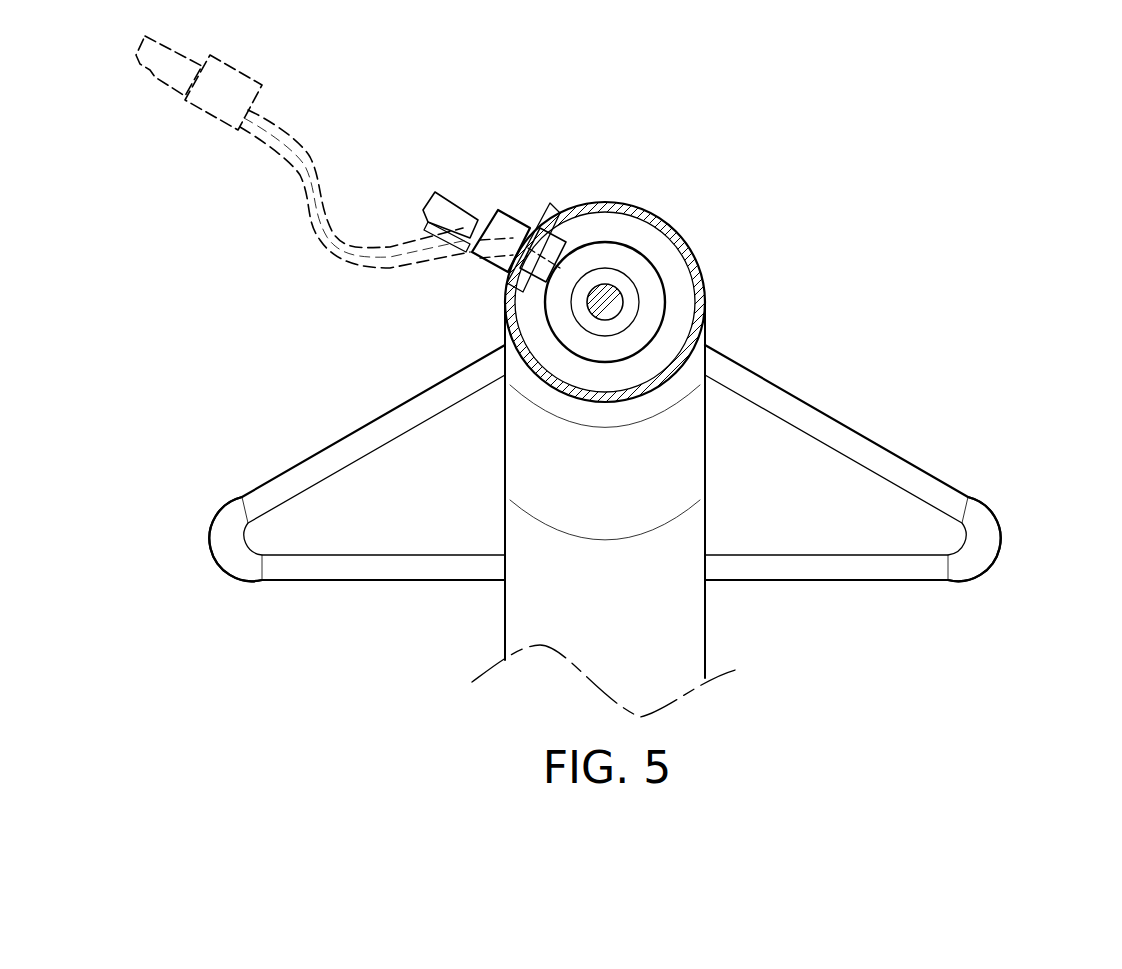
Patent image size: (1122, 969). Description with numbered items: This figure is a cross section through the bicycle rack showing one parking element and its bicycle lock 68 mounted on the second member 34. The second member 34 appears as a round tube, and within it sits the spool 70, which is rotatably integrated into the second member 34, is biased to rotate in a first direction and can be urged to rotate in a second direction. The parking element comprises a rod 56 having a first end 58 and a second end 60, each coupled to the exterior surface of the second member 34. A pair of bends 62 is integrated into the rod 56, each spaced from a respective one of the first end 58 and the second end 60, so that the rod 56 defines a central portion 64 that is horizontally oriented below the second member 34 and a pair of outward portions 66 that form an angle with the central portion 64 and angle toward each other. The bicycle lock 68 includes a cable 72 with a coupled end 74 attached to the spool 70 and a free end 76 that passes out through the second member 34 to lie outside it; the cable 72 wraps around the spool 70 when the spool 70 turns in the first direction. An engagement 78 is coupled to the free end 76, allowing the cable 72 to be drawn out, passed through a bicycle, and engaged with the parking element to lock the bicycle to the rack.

The second member 34 is at (687, 243).
The rod 56 is at (618, 526).
The first end 58 is at (498, 330).
The second end 60 is at (684, 322).
The bends 62 is at (218, 585).
The central portion 64 is at (810, 595).
The outward portions 66 is at (325, 425).
The bicycle lock 68 is at (498, 180).
The spool 70 is at (662, 215).
The cable 72 is at (367, 260).
The coupled end 74 is at (562, 215).
The free end 76 is at (523, 217).
The engagement 78 is at (455, 202).